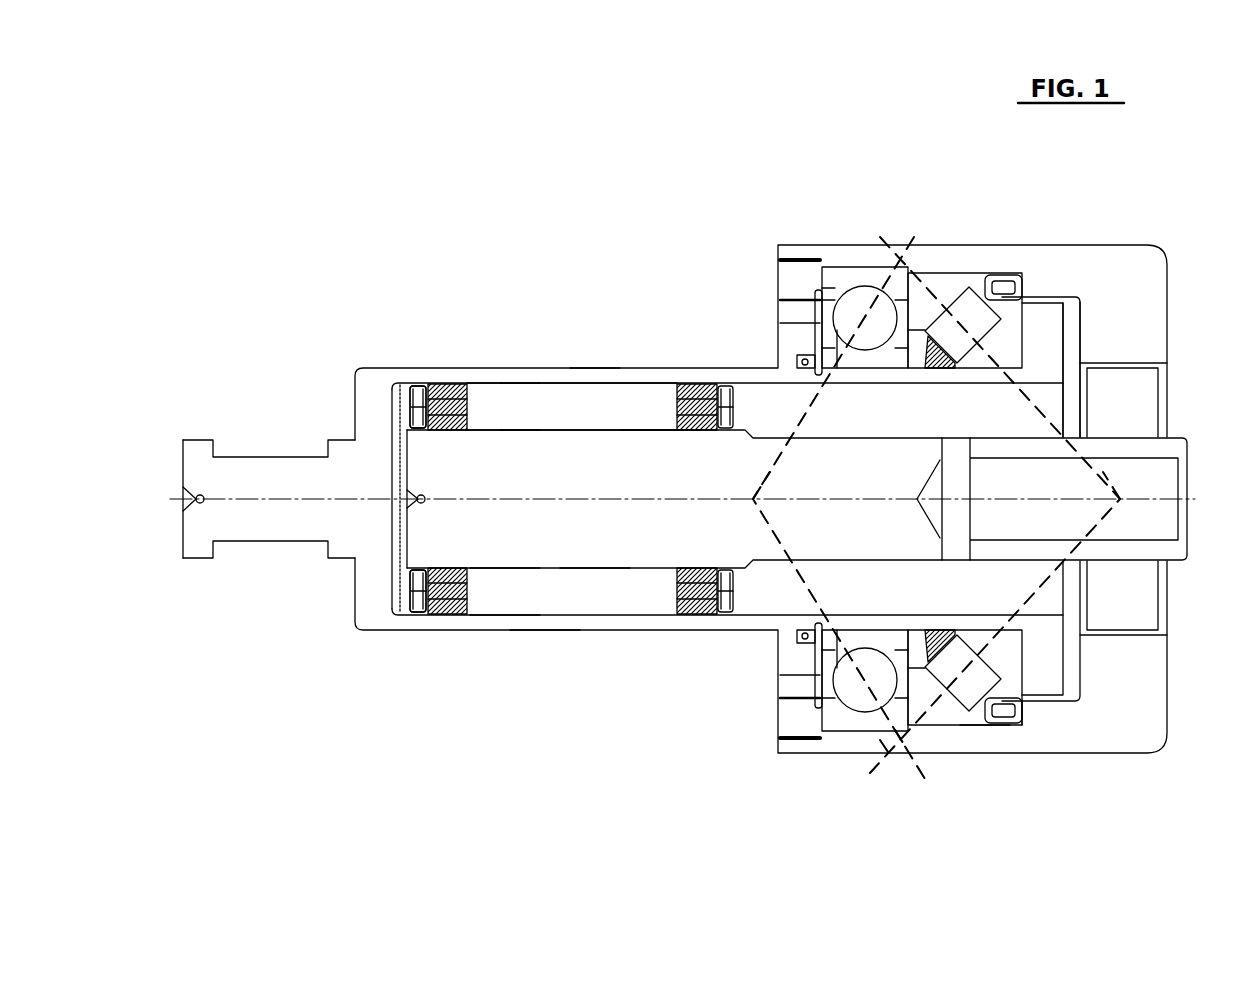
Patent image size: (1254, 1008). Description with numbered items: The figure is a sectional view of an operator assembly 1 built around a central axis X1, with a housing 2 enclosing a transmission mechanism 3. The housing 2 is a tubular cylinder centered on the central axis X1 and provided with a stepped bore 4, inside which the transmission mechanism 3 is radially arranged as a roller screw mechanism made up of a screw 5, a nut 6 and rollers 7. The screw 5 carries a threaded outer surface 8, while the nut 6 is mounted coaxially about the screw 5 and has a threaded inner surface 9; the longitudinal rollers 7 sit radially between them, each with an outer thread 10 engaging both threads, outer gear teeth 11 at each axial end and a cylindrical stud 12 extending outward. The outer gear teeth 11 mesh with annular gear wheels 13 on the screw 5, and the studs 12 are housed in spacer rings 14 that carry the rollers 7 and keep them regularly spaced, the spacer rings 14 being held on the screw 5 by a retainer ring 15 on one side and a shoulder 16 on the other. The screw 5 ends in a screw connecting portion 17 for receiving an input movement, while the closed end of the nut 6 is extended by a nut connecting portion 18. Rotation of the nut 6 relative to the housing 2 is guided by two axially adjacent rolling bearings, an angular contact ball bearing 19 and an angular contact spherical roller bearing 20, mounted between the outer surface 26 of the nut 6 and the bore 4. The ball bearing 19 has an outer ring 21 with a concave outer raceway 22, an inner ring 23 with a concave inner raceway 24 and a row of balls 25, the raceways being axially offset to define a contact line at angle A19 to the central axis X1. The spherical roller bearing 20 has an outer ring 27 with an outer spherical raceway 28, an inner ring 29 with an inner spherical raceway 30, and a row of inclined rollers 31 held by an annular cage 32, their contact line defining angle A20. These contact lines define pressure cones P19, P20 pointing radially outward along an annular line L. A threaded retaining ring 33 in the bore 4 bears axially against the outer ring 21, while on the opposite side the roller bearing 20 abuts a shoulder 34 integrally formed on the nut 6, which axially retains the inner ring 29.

The operator assembly 1 is at (214, 230).
The housing 2 is at (1140, 768).
The transmission mechanism 3 is at (483, 386).
The stepped bore 4 is at (1040, 697).
The screw 5 is at (646, 556).
The nut 6 is at (545, 640).
The rollers 7 is at (497, 600).
The threaded outer surface 8 is at (594, 571).
The threaded inner surface 9 is at (519, 398).
The outer thread 10 is at (648, 458).
The outer gear teeth 11 is at (437, 616).
The cylindrical stud 12 is at (405, 616).
The annular gear wheels 13 is at (418, 400).
The spacer rings 14 is at (420, 384).
The retainer ring 15 is at (410, 572).
The shoulder 16 is at (742, 576).
The screw connecting portion 17 is at (1178, 552).
The nut connecting portion 18 is at (208, 562).
The angular contact ball bearing 19 is at (806, 475).
The angular contact spherical roller bearing 20 is at (1063, 490).
The outer ring 21 is at (843, 275).
The concave outer raceway 22 is at (870, 305).
The inner ring 23 is at (882, 364).
The concave inner raceway 24 is at (853, 326).
The balls 25 is at (848, 713).
The outer surface 26 is at (596, 366).
The outer ring 27 is at (943, 283).
The outer spherical raceway 28 is at (982, 302).
The inner ring 29 is at (1008, 340).
The inner spherical raceway 30 is at (1024, 275).
The rollers 31 is at (987, 724).
The annular cage 32 is at (1036, 735).
The retaining ring 33 is at (784, 273).
The shoulder 34 is at (1060, 320).
The contact line angle of ball bearing A19 is at (802, 497).
The contact line angle of spherical roller bearing A20 is at (1075, 462).
The pressure cone of ball bearing P19 is at (905, 760).
The pressure cone of spherical roller bearing P20 is at (882, 762).
The annular line L is at (903, 758).
The central axis X1 is at (657, 484).